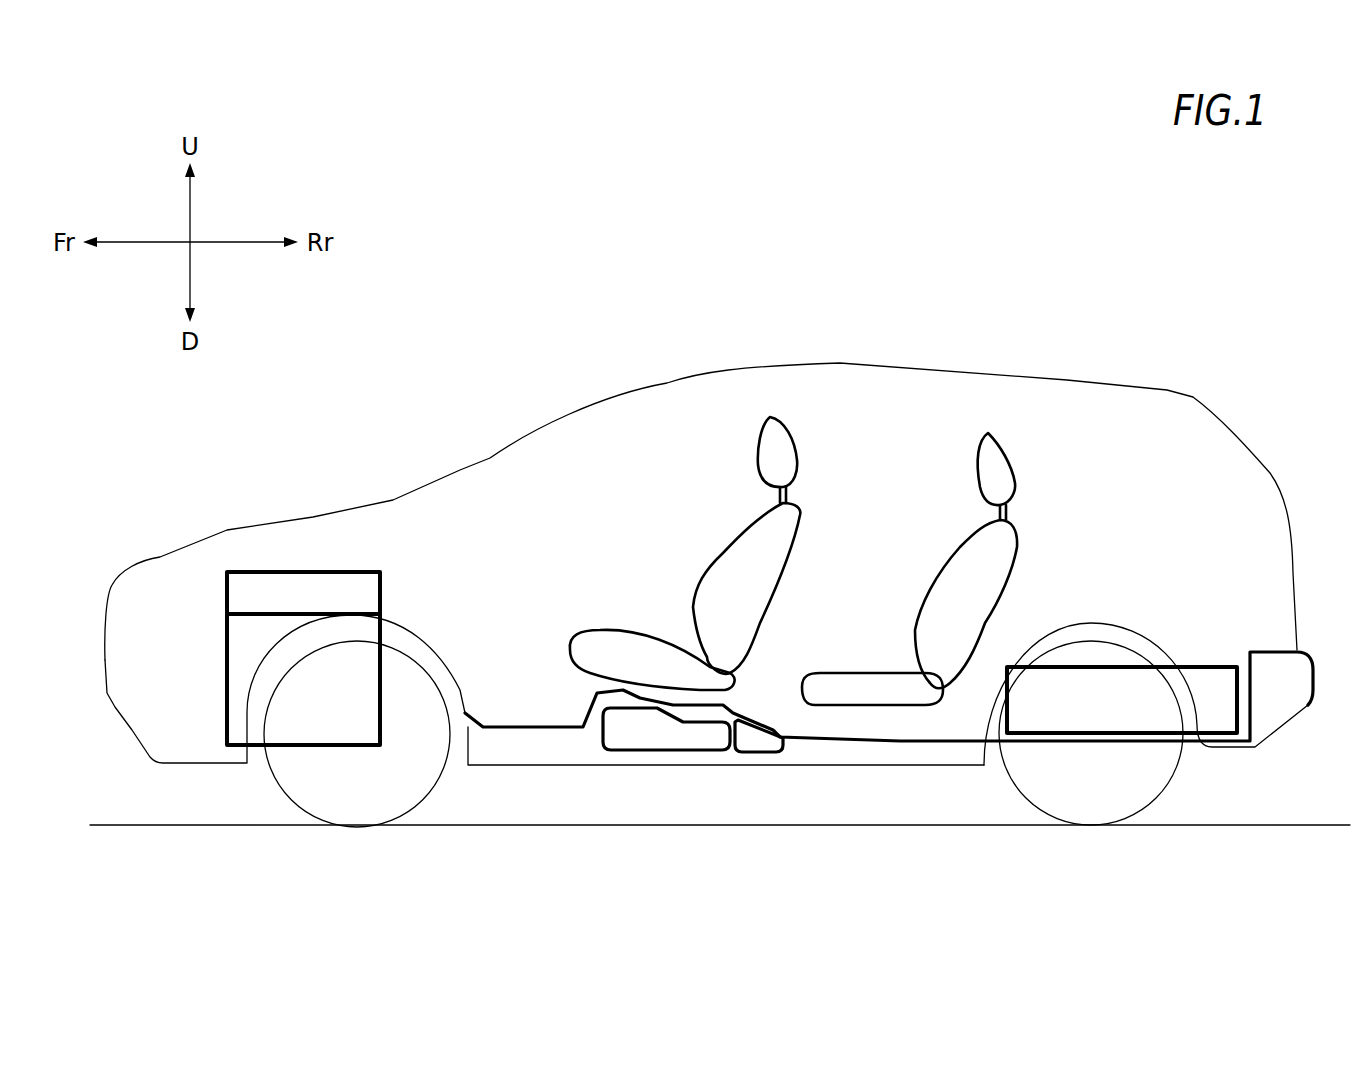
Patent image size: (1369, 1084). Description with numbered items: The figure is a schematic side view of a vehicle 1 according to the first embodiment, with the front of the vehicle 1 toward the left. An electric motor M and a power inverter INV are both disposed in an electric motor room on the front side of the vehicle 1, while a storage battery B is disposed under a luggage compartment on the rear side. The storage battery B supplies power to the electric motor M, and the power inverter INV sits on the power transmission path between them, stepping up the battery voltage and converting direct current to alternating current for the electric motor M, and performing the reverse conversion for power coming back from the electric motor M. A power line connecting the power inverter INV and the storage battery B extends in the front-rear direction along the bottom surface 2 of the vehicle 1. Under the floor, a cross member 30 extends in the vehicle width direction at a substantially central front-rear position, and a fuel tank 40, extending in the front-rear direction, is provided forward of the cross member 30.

The vehicle 1 is at (533, 398).
The bottom surface 2 is at (537, 735).
The cross member 30 is at (760, 745).
The fuel tank 40 is at (663, 740).
The power inverter INV is at (283, 570).
The electric motor M is at (227, 655).
The storage battery B is at (1197, 665).